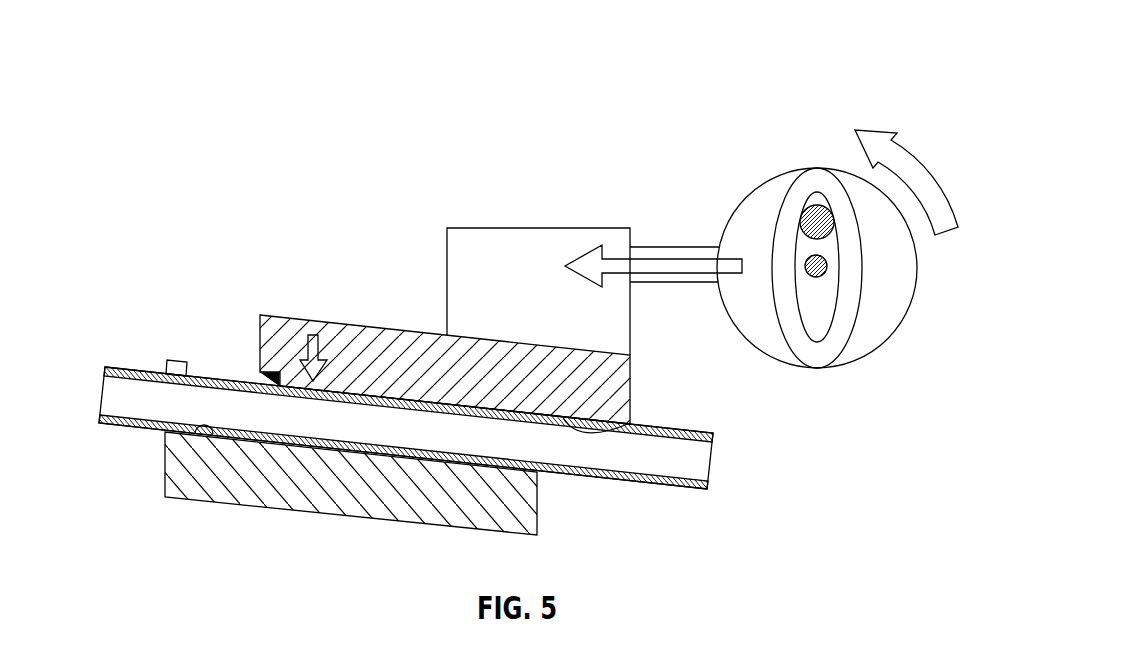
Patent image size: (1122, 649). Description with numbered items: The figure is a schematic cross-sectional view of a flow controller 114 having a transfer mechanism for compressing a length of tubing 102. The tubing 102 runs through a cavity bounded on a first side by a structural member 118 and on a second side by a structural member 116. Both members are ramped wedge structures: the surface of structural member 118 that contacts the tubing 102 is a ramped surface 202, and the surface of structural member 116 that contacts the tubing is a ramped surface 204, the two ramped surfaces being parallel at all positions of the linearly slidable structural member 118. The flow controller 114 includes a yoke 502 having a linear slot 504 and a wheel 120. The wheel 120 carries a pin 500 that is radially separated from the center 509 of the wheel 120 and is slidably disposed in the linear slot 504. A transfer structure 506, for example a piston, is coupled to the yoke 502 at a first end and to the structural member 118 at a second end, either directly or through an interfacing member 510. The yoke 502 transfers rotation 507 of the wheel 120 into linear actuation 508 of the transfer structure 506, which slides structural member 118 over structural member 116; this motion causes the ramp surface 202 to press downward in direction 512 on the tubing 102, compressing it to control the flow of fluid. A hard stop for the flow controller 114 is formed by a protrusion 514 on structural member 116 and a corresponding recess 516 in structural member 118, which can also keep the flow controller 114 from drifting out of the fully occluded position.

The tubing 102 is at (660, 487).
The flow controller 114 is at (785, 53).
The structural member 116 is at (480, 508).
The structural member 118 is at (610, 387).
The wheel 120 is at (887, 317).
The ramped surface 202 is at (630, 423).
The ramped surface 204 is at (199, 434).
The pin 500 is at (815, 217).
The yoke 502 is at (838, 337).
The linear slot 504 is at (817, 328).
The transfer structure 506 is at (693, 247).
The rotation 507 is at (898, 160).
The linear actuation 508 is at (653, 267).
The center 509 is at (828, 268).
The interfacing member 510 is at (500, 240).
The direction 512 is at (310, 333).
The protrusion 514 is at (167, 368).
The recess 516 is at (262, 377).